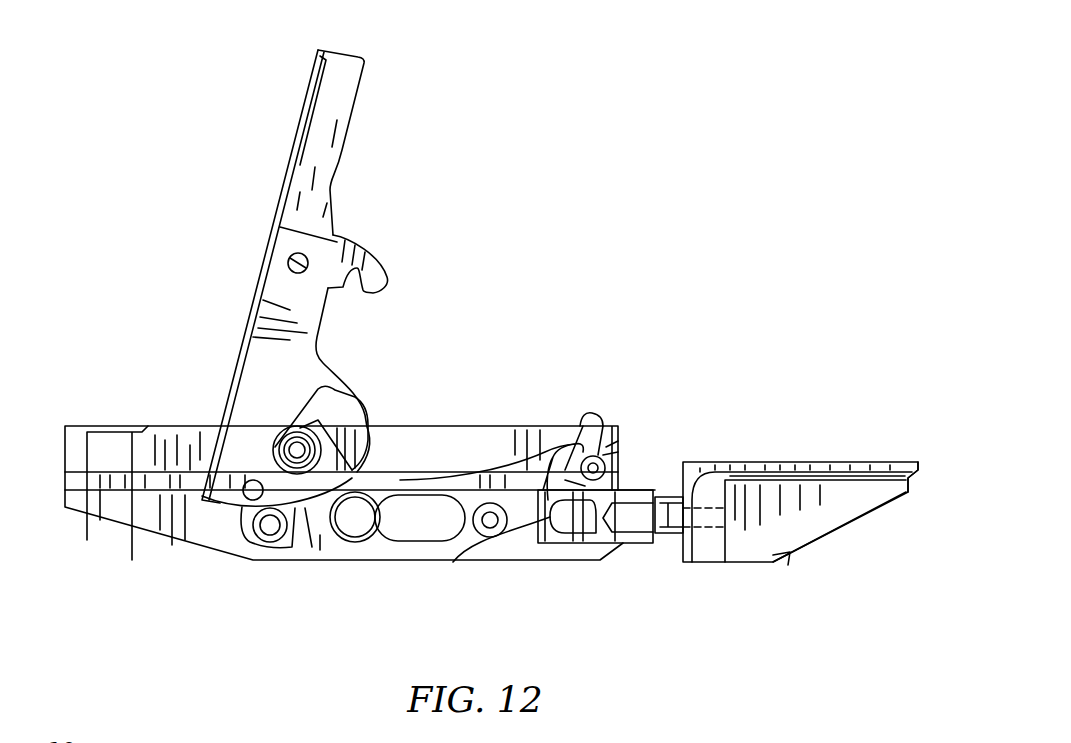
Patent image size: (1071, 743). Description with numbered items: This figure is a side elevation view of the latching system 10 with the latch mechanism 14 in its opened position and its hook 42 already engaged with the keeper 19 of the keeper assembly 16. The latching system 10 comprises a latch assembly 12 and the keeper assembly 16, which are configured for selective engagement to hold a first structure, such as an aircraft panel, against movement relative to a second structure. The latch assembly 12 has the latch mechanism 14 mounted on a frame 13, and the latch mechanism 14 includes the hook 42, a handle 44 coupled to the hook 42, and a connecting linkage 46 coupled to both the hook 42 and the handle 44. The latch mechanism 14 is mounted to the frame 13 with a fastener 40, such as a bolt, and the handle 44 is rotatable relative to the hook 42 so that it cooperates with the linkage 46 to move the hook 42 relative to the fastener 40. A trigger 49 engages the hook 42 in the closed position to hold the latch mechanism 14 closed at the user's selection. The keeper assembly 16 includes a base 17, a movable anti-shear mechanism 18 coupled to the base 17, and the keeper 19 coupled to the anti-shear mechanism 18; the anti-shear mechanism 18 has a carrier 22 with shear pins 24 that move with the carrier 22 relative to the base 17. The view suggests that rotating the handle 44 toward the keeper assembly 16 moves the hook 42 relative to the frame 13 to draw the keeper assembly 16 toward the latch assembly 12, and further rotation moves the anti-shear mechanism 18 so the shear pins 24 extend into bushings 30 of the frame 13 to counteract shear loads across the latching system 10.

The latching system 10 is at (142, 148).
The latch assembly 12 is at (517, 363).
The frame 13 is at (60, 446).
The latch mechanism 14 is at (254, 277).
The keeper assembly 16 is at (846, 424).
The base 17 is at (925, 474).
The anti-shear mechanism 18 is at (745, 466).
The keeper 19 is at (573, 515).
The carrier 22 is at (822, 514).
The shear pins 24 is at (712, 532).
The bushings 30 is at (633, 522).
The fastener 40 is at (352, 524).
The hook 42 is at (513, 532).
The handle 44 is at (358, 57).
The connecting linkage 46 is at (361, 477).
The trigger 49 is at (372, 250).